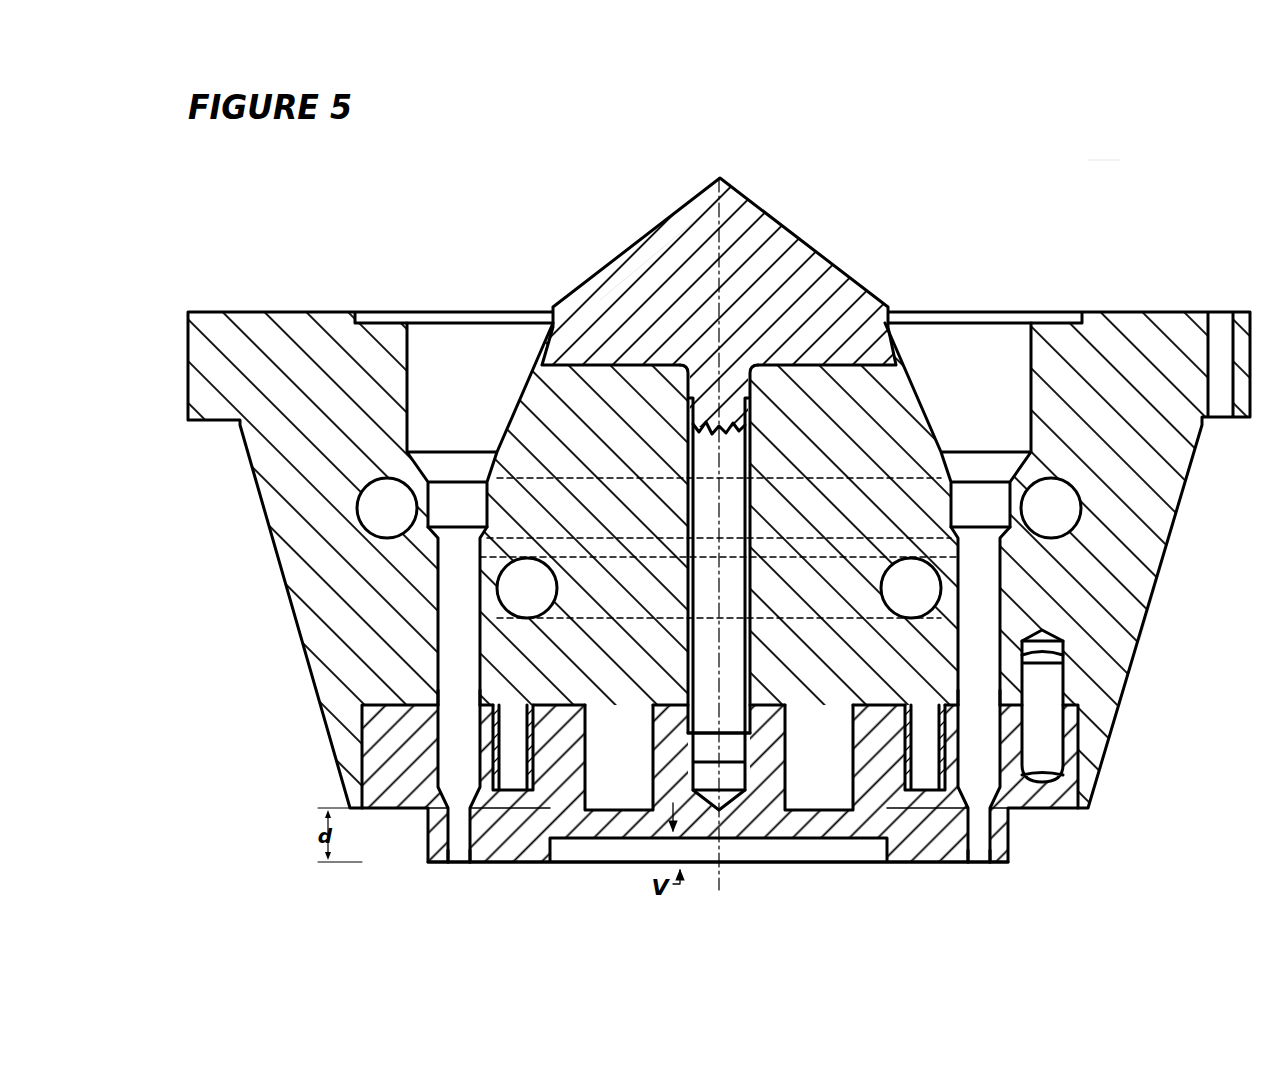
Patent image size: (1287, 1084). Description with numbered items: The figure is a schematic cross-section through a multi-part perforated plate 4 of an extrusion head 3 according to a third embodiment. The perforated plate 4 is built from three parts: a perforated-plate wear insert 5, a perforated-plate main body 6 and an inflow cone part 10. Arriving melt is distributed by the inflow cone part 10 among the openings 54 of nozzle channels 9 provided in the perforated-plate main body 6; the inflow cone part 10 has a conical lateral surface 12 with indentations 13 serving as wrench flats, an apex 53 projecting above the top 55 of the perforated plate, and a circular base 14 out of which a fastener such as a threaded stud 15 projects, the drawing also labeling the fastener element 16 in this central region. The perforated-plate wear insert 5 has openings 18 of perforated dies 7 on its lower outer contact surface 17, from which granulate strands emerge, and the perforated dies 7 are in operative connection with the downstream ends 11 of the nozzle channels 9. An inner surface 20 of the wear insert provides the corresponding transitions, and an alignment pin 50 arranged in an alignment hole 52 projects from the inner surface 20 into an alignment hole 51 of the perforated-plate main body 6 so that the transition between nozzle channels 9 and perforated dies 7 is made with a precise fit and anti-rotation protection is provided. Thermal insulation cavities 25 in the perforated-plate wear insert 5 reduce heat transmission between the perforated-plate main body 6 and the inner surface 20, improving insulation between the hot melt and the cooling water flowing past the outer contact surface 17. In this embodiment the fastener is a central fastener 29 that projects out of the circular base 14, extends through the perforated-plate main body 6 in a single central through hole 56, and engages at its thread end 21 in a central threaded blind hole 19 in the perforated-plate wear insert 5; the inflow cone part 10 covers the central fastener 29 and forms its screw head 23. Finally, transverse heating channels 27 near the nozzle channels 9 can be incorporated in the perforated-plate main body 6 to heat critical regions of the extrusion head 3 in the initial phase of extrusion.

The extrusion head 3 is at (1106, 157).
The perforated plate 4 is at (1128, 307).
The perforated-plate wear insert 5 is at (575, 840).
The perforated-plate main body 6 is at (1172, 520).
The perforated dies 7 is at (440, 822).
The nozzle channels 9 is at (437, 592).
The inflow cone part 10 is at (762, 207).
The downstream ends 11 is at (459, 702).
The conical lateral surface 12 is at (692, 204).
The indentations 13 is at (553, 316).
The circular base 14 is at (612, 367).
The threaded stud 15 is at (687, 445).
The bolt 16 is at (688, 573).
The outer contact surface 17 is at (500, 862).
The openings 18 is at (449, 867).
The central threaded blind hole 19 is at (692, 742).
The inner surface 20 is at (873, 712).
The thread end 21 is at (688, 718).
The screw head 23 is at (643, 267).
The thermal insulation cavities 25 is at (514, 782).
The heating channels 27 is at (383, 517).
The central fastener 29 is at (756, 445).
The alignment pin 50 is at (1050, 692).
The alignment hole 51 is at (1064, 656).
The alignment hole 52 is at (1066, 742).
The apex 53 is at (723, 180).
The openings 54 is at (459, 536).
The top 55 is at (300, 312).
The through hole 56 is at (752, 498).